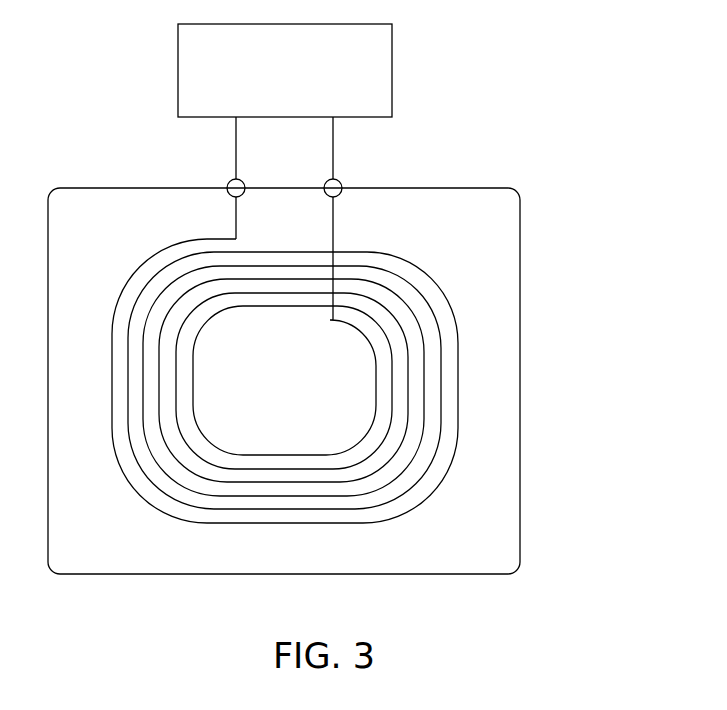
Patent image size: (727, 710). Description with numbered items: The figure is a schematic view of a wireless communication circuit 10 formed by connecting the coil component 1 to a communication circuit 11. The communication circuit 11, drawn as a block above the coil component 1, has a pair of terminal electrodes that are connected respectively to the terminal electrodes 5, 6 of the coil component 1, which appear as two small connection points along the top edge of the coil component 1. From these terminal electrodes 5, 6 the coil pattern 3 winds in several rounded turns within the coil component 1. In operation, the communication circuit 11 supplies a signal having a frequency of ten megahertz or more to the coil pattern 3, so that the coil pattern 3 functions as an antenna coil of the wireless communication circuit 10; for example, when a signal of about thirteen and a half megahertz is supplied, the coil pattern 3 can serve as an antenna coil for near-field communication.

The wireless communication circuit 10 is at (544, 23).
The communication circuit 11 is at (392, 64).
The coil component 1 is at (520, 238).
The coil pattern 3 is at (460, 368).
The terminal electrode 5 is at (229, 183).
The terminal electrode 6 is at (340, 183).